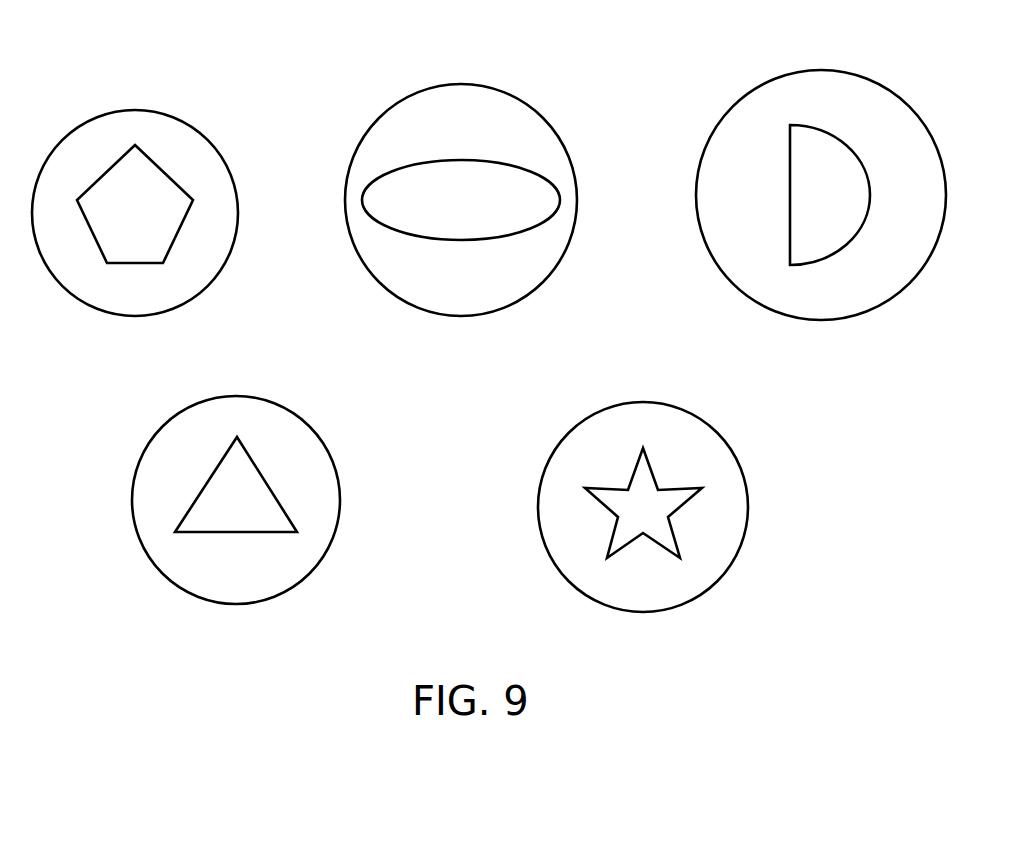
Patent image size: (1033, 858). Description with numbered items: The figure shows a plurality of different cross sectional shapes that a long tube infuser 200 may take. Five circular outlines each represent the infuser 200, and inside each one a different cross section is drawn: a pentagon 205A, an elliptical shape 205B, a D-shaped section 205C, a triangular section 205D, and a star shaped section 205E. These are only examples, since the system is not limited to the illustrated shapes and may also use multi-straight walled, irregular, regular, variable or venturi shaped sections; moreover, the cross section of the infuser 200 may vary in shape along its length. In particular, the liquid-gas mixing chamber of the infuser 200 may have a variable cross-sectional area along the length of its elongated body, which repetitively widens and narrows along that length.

The infuser 200 is at (115, 110).
The pentagon cross section 205A is at (150, 186).
The elliptical cross section 205B is at (442, 180).
The D-shaped cross section 205C is at (816, 154).
The triangular cross section 205D is at (238, 484).
The star shaped cross section 205E is at (646, 500).